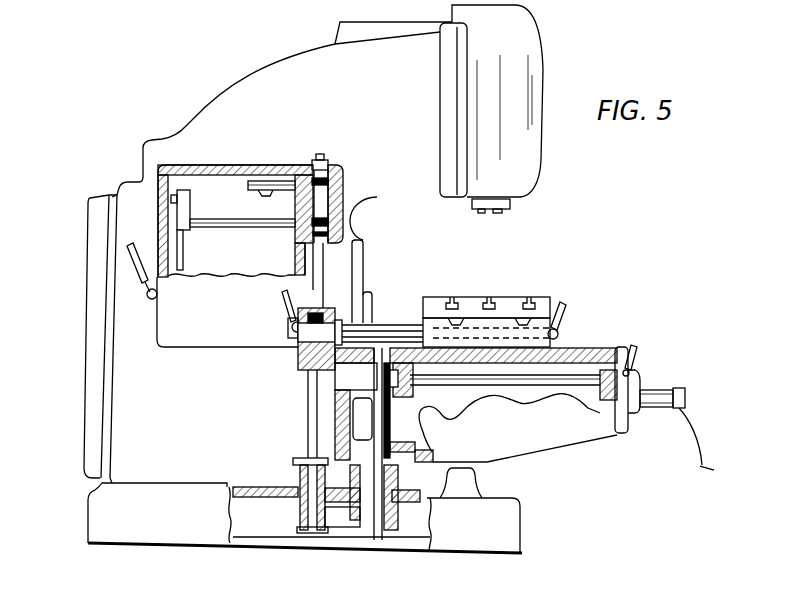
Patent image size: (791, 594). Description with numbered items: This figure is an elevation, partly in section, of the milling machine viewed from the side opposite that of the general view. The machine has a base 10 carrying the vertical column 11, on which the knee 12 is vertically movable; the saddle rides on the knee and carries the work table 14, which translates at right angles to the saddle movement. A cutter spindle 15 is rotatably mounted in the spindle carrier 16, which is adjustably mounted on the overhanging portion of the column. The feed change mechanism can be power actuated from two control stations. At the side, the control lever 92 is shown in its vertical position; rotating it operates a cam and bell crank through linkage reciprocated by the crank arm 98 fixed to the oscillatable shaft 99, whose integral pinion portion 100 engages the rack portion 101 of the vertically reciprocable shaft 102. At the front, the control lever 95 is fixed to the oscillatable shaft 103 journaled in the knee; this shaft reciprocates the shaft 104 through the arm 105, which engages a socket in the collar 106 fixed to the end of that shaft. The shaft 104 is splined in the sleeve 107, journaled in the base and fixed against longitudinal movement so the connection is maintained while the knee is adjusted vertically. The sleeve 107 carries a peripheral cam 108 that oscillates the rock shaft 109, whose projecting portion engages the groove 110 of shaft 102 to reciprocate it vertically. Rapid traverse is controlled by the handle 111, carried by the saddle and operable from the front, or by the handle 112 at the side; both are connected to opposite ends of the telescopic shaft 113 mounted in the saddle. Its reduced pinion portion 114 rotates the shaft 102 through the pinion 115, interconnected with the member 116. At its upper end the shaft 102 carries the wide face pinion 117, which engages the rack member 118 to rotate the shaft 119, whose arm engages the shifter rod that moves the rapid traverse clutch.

The base 10 is at (103, 515).
The vertical column 11 is at (198, 123).
The knee 12 is at (572, 436).
The work table 14 is at (533, 284).
The cutter spindle 15 is at (503, 215).
The spindle carrier 16 is at (533, 40).
The control lever 92 is at (140, 250).
The control lever 95 is at (645, 352).
The crank arm 98 is at (190, 205).
The oscillatable shaft 99 is at (238, 227).
The pinion portion 100 is at (350, 212).
The rack portion 101 is at (323, 248).
The reciprocable shaft 102 is at (308, 413).
The oscillatable shaft 103 is at (465, 385).
The shaft 104 is at (377, 540).
The arm 105 is at (393, 400).
The collar 106 is at (373, 367).
The sleeve 107 is at (355, 537).
The peripheral cam 108 is at (395, 523).
The rock shaft 109 is at (340, 520).
The groove 110 is at (307, 537).
The handle 111 is at (564, 315).
The handle 112 is at (293, 317).
The telescopic shaft 113 is at (400, 316).
The reduced pinion portion 114 is at (298, 353).
The pinion 115 is at (310, 297).
The member 116 is at (318, 312).
The wide face pinion 117 is at (327, 170).
The rack member 118 is at (281, 192).
The shaft 119 is at (265, 193).